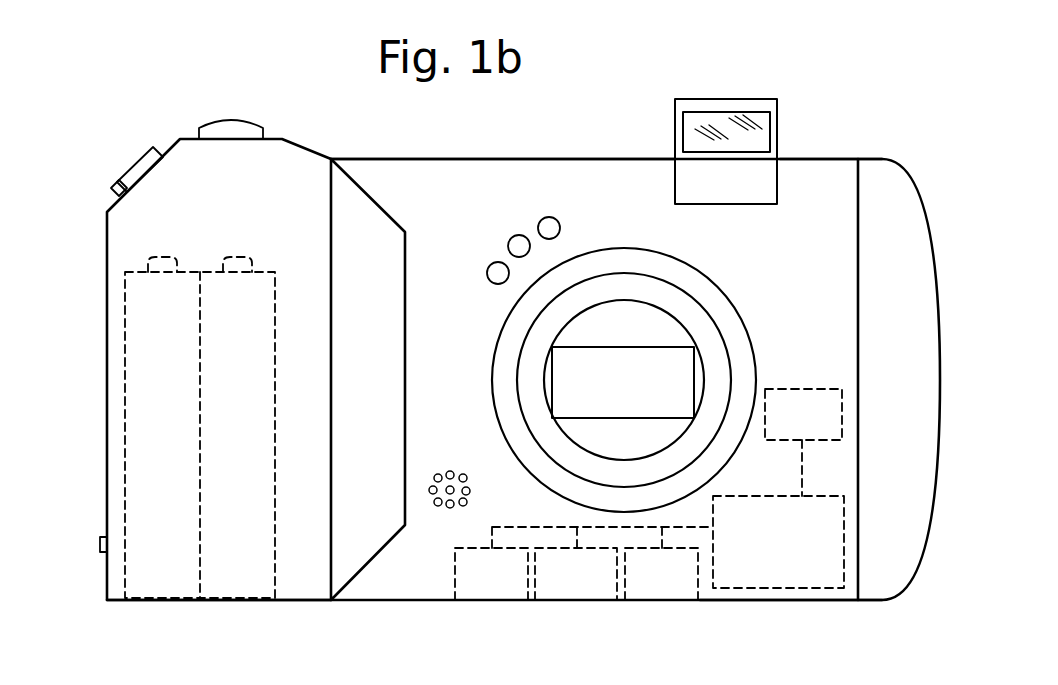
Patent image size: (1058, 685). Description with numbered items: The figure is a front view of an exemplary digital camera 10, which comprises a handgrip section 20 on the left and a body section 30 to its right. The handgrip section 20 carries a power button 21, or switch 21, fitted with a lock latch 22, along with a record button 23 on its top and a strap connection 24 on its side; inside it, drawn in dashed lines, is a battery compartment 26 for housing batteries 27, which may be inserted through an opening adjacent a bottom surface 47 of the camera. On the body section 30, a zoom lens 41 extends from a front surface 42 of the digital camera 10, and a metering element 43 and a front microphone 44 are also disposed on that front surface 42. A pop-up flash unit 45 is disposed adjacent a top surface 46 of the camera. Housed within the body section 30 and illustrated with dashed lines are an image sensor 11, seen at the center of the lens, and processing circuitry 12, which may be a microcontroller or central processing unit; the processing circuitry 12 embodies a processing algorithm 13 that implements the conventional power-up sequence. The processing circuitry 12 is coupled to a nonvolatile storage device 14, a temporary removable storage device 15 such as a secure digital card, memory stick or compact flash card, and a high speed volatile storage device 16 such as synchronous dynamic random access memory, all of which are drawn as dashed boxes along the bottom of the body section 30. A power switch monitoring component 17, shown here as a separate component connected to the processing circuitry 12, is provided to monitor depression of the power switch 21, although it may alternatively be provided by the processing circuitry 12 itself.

The digital camera 10 is at (132, 105).
The image sensor 11 is at (668, 347).
The processing circuitry 12 is at (833, 496).
The processing algorithm 13 is at (798, 557).
The nonvolatile storage device 14 is at (660, 595).
The temporary removable storage device 15 is at (560, 595).
The high speed storage device 16 is at (461, 595).
The power switch monitoring component 17 is at (813, 388).
The handgrip section 20 is at (298, 600).
The power button 21 is at (118, 167).
The lock latch 22 is at (112, 190).
The record button 23 is at (265, 128).
The strap connection 24 is at (100, 543).
The battery compartment 26 is at (125, 580).
The batteries 27 is at (225, 269).
The body section 30 is at (403, 600).
The zoom lens 41 is at (703, 275).
The front surface 42 is at (535, 170).
The metering element 43 is at (557, 218).
The front microphone 44 is at (470, 490).
The pop-up flash unit 45 is at (675, 133).
The top surface 46 is at (824, 159).
The bottom surface 47 is at (825, 600).